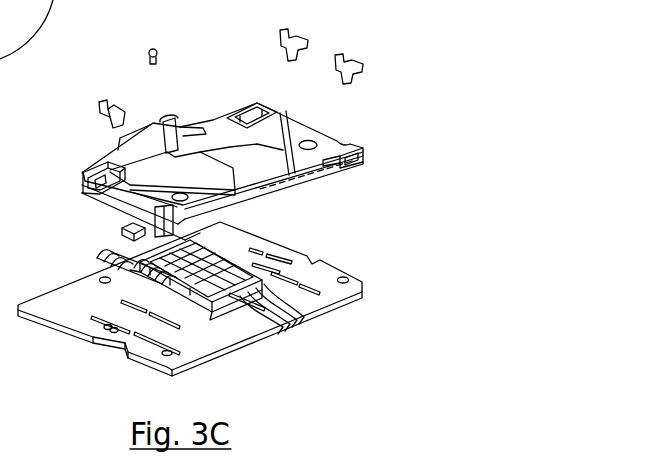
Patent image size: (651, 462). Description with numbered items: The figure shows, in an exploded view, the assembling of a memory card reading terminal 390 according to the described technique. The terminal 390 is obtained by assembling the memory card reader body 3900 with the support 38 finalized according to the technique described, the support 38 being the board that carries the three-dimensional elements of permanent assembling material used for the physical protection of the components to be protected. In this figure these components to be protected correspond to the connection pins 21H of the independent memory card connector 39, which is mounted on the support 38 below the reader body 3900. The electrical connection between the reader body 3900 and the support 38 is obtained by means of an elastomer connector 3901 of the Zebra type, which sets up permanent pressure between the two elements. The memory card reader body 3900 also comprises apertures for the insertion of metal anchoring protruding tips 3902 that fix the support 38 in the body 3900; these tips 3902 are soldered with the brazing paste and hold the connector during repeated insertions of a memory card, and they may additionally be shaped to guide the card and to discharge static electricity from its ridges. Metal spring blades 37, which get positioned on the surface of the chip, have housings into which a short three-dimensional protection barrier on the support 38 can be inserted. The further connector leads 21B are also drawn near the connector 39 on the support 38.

The memory card reading terminal 390 is at (365, 93).
The memory card reader body 3900 is at (206, 120).
The elastomer connector 3901 is at (121, 229).
The metal anchoring protruding tips 3902 is at (111, 100).
The support 38 is at (75, 322).
The metal spring blades 37 is at (203, 296).
The independent memory card connector 39 is at (223, 305).
The connection pins 21H is at (100, 237).
The contact leads 21B is at (313, 322).